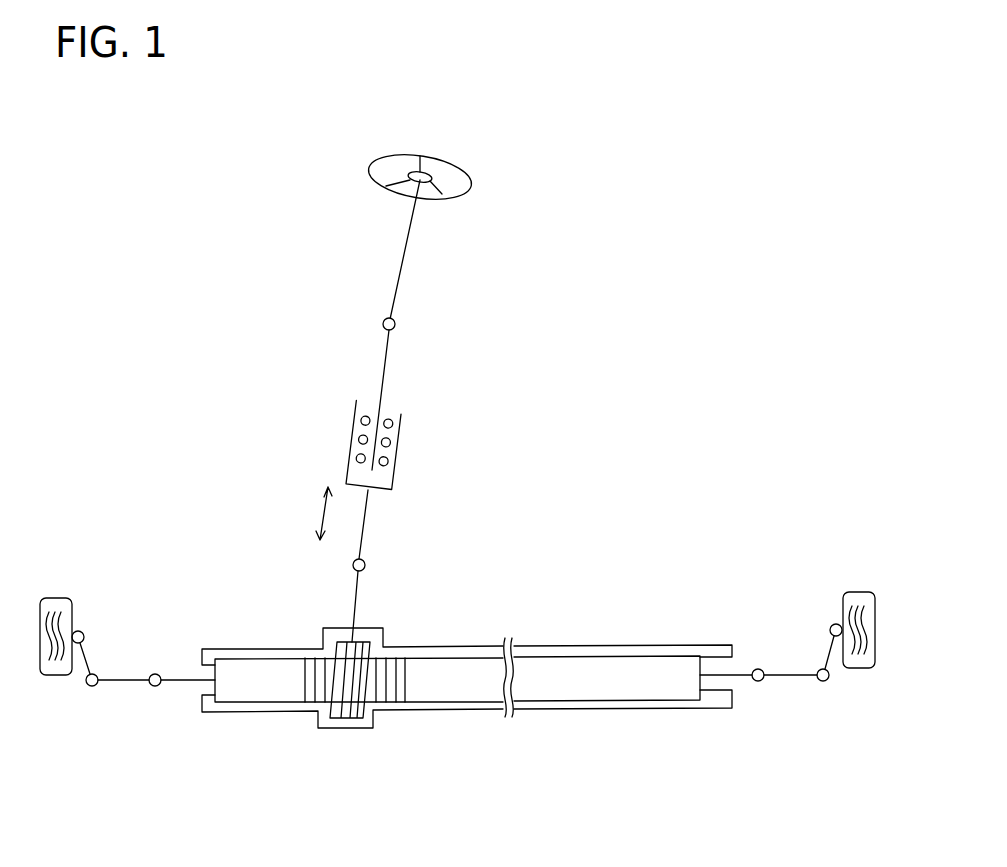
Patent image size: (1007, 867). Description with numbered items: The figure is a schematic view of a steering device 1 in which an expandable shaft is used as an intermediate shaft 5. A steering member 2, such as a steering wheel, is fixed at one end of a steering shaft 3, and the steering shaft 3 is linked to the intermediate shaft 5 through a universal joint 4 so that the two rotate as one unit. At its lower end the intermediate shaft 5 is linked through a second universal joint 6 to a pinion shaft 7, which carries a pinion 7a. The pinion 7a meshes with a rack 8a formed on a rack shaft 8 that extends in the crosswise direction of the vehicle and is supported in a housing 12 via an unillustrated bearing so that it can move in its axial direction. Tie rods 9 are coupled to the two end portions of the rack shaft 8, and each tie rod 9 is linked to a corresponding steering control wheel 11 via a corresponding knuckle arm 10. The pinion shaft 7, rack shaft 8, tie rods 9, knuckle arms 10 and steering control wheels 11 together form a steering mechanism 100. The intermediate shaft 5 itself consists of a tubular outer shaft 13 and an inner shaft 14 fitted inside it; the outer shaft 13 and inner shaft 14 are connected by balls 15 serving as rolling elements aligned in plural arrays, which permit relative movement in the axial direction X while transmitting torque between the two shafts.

The steering device 1 is at (490, 242).
The steering member 2 is at (410, 153).
The steering shaft 3 is at (400, 248).
The universal joint 4 is at (396, 324).
The intermediate shaft 5 is at (423, 416).
The universal joint 6 is at (352, 563).
The pinion shaft 7 is at (367, 602).
The pinion 7a is at (348, 714).
The rack shaft 8 is at (620, 644).
The rack 8a is at (392, 690).
The tie rod 9 is at (123, 685).
The knuckle arm 10 is at (85, 662).
The steering control wheel 11 is at (55, 598).
The housing 12 is at (635, 710).
The outer shaft 13 is at (352, 443).
The inner shaft 14 is at (385, 358).
The balls 15 is at (390, 460).
The steering mechanism 100 is at (538, 606).
The axial direction X is at (322, 512).